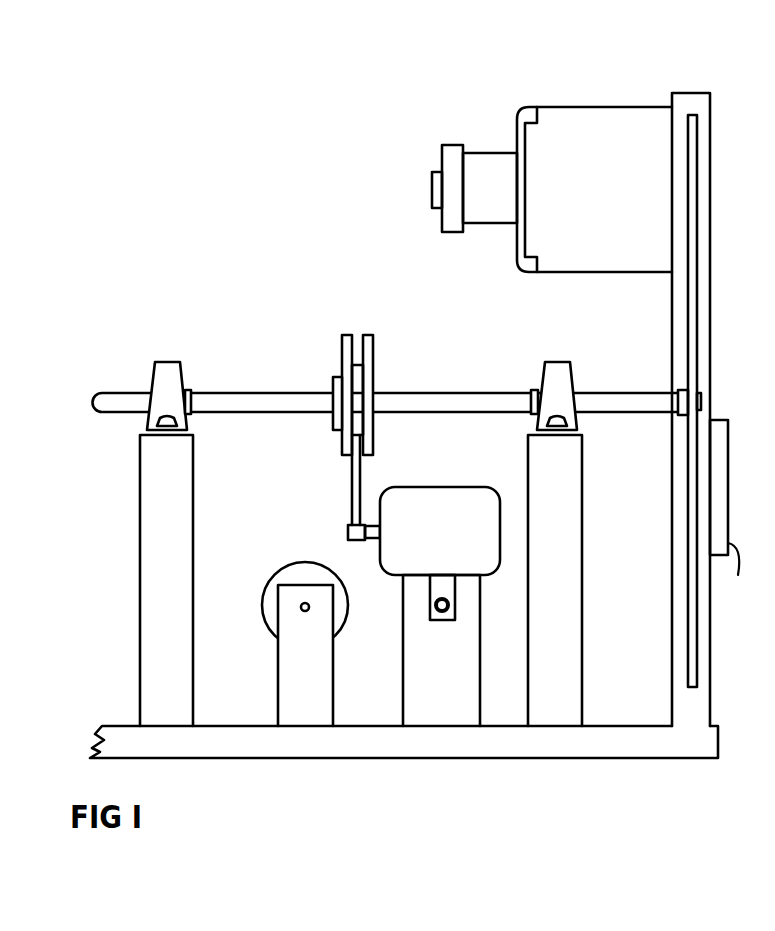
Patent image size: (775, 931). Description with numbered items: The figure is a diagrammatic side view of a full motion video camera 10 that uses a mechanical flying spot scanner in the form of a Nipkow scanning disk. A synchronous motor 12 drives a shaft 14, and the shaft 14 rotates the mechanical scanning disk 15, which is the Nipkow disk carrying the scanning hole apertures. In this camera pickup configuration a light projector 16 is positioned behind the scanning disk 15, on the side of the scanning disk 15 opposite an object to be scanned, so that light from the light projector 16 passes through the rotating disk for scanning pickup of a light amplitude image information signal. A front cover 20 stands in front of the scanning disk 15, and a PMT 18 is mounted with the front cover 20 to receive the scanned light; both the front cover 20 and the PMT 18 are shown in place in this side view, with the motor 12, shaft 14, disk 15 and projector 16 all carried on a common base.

The full motion video camera 10 is at (311, 233).
The synchronous motor 12 is at (447, 458).
The shaft 14 is at (452, 392).
The scanning disk 15 is at (692, 645).
The light projector 16 is at (611, 107).
The PMT 18 is at (730, 438).
The front cover 20 is at (712, 302).